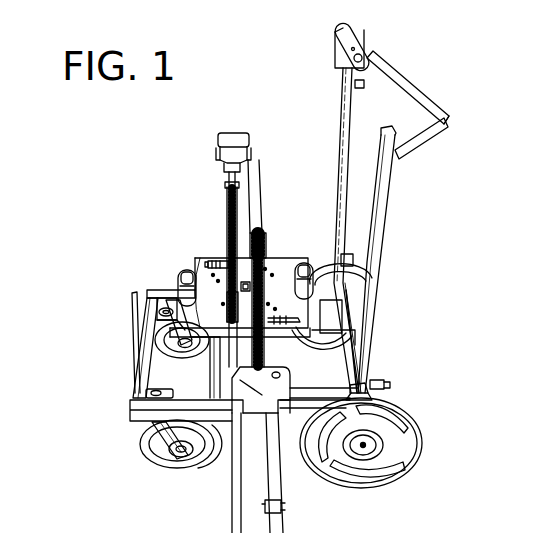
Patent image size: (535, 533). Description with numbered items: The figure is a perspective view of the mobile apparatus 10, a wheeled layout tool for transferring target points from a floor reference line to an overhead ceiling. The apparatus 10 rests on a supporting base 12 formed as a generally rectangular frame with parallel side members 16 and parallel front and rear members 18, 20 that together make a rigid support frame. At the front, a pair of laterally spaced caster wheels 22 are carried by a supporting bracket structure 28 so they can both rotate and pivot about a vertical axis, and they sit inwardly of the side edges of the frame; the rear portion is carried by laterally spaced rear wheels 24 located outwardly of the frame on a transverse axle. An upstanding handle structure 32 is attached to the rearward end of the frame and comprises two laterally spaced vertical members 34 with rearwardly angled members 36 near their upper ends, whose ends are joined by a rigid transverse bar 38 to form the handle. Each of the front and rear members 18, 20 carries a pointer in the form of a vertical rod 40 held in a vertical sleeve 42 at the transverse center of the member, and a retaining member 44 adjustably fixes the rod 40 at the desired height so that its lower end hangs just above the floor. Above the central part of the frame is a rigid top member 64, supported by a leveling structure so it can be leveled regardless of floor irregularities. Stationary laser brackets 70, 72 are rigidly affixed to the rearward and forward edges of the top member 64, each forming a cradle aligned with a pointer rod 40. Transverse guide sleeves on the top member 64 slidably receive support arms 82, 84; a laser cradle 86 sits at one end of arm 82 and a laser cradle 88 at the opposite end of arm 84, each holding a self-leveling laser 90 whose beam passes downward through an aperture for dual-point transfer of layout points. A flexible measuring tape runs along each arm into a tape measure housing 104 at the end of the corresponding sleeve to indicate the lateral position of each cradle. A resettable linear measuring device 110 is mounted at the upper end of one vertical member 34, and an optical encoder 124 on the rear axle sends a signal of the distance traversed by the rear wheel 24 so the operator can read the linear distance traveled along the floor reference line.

The apparatus 10 is at (195, 385).
The supporting base 12 is at (128, 389).
The side members 16 is at (200, 458).
The front member 18 is at (149, 290).
The rear member 20 is at (353, 355).
The caster wheels 22 is at (150, 448).
The rear wheels 24 is at (417, 432).
The supporting bracket structure 28 is at (157, 412).
The handle structure 32 is at (387, 202).
The upstanding vertical members 34 is at (345, 108).
The rearwardly angled members 36 is at (413, 147).
The transverse bar 38 is at (418, 82).
The vertical rod 40 is at (132, 293).
The vertical sleeve 42 is at (135, 348).
The retaining member 44 is at (135, 335).
The top member 64 is at (270, 258).
The laser bracket 70 is at (310, 277).
The laser bracket 72 is at (183, 260).
The support arm 82 is at (230, 484).
The support arm 84 is at (282, 477).
The laser cradle 86 is at (218, 155).
The laser cradle 88 is at (278, 420).
The self-leveling laser 90 is at (237, 132).
The tape measure housing 104 is at (266, 240).
The resettable linear measuring device 110 is at (362, 16).
The optical encoder 124 is at (332, 317).